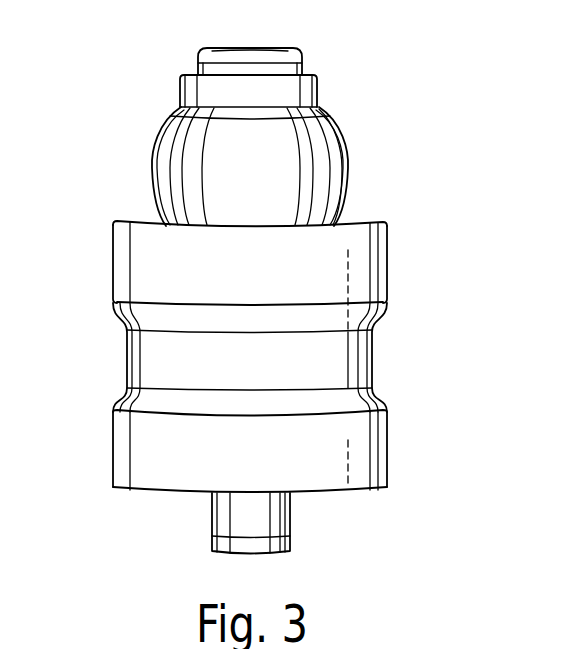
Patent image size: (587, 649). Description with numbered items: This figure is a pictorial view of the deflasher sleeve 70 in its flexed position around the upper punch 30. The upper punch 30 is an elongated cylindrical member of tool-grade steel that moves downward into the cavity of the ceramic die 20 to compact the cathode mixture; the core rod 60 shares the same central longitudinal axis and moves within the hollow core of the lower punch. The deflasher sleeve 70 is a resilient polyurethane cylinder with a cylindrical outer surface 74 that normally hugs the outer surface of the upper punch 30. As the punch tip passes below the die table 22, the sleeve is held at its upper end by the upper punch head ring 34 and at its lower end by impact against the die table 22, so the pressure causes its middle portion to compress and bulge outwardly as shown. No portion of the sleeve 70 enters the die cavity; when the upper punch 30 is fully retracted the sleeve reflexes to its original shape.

The die 20 is at (230, 324).
The die table 22 is at (362, 222).
The upper punch 30 is at (295, 47).
The upper punch head ring 34 is at (318, 90).
The core rod 60 is at (291, 520).
The deflasher sleeve 70 is at (219, 159).
The cylindrical outer surface 74 is at (162, 180).